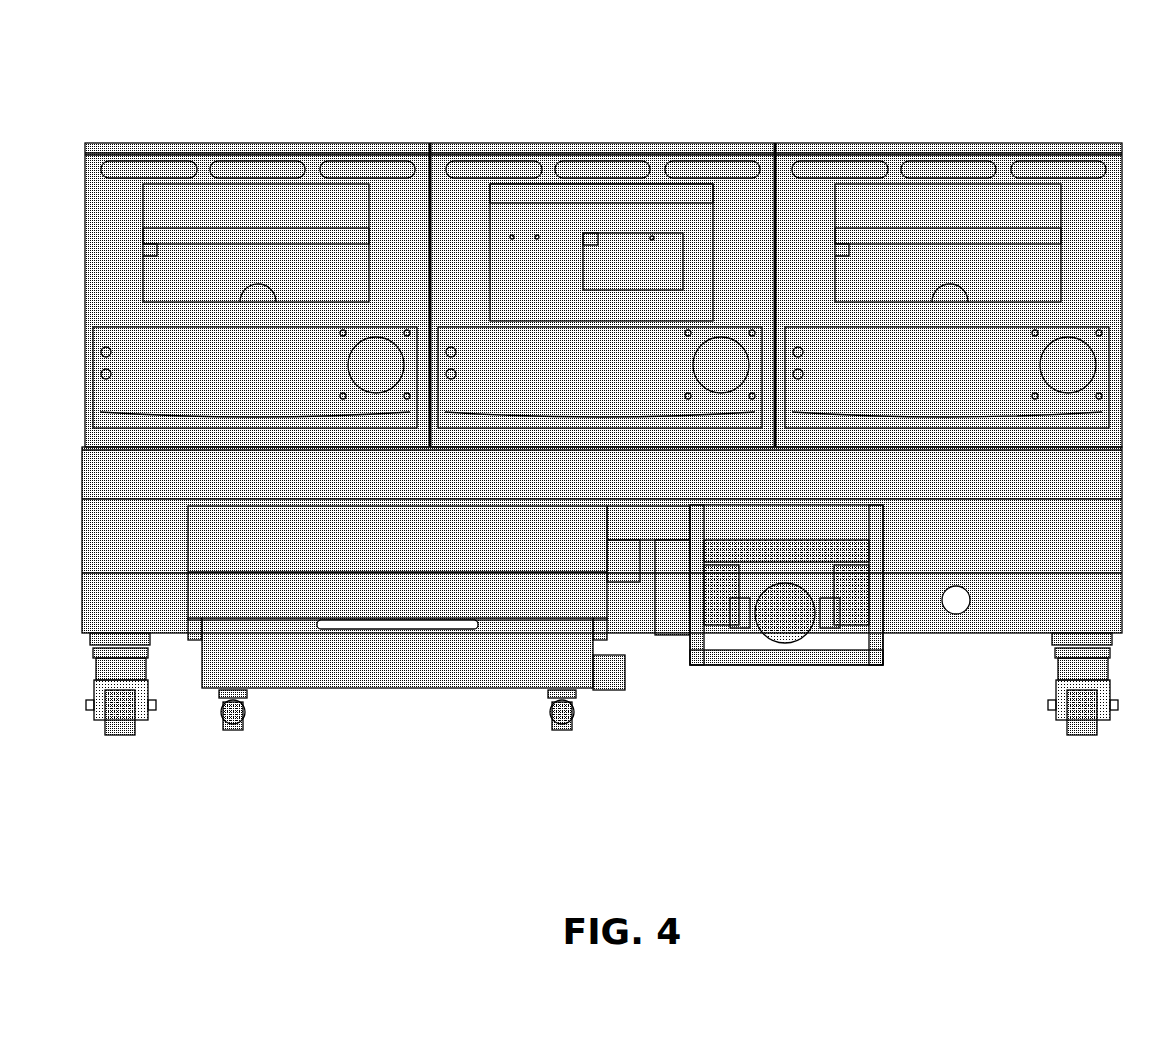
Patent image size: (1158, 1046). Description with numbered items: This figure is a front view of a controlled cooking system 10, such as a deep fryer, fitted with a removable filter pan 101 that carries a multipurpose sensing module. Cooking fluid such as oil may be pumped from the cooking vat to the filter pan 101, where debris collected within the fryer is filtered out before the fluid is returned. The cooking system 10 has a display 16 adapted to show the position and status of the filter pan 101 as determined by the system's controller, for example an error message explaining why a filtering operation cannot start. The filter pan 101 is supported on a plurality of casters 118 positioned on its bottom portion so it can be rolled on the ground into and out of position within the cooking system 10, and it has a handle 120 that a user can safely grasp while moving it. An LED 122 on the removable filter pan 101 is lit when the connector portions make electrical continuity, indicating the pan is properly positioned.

The controlled cooking system 10 is at (602, 438).
The display 16 is at (524, 207).
The filter pan 101 is at (432, 676).
The casters 118 is at (232, 718).
The handle 120 is at (343, 629).
The LED 122 is at (439, 680).